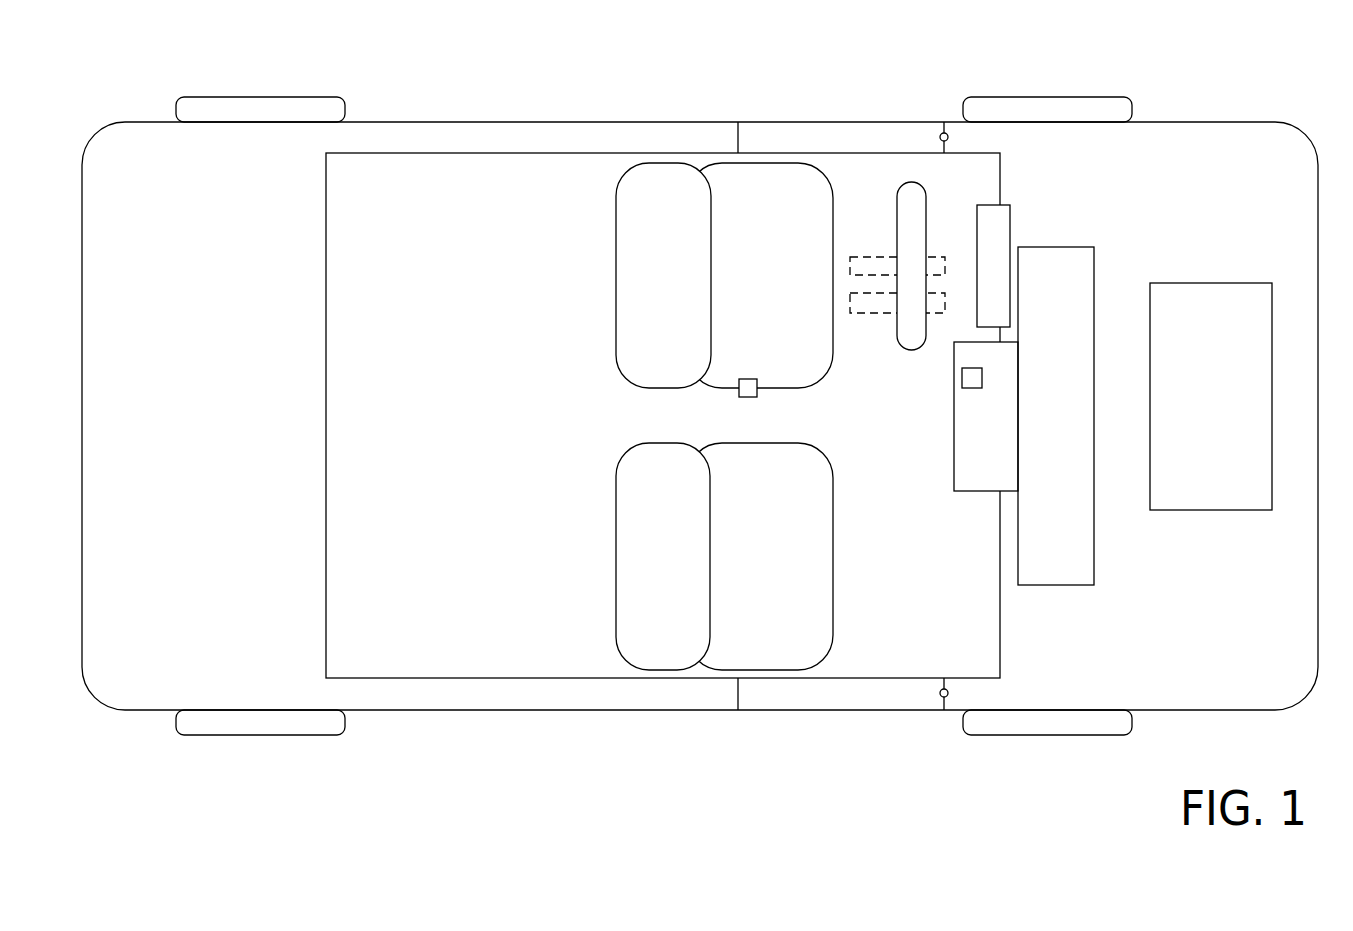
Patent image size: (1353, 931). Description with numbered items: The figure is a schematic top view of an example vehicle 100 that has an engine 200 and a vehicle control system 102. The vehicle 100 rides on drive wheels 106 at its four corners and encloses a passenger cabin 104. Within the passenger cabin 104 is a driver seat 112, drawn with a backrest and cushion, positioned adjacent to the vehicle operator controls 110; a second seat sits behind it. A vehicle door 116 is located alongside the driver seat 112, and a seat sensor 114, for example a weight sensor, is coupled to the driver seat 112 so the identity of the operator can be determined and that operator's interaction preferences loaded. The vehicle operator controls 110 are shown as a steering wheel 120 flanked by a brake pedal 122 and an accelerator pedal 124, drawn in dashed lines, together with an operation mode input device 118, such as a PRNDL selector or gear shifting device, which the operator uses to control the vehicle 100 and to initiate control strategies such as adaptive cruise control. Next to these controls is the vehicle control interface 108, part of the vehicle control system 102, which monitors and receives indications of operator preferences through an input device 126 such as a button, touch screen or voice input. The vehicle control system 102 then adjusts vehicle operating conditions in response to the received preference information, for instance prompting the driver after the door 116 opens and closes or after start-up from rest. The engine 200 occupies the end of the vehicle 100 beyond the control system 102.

The vehicle 100 is at (1188, 93).
The vehicle control system 102 is at (1056, 416).
The passenger cabin 104 is at (326, 418).
The drive wheels 106 is at (260, 96).
The vehicle control interface 108 is at (986, 416).
The vehicle operator controls 110 is at (954, 241).
The driver seat 112 is at (616, 237).
The seat sensor 114 is at (747, 398).
The vehicle door 116 is at (842, 122).
The operation mode input device 118 is at (985, 195).
The steering wheel 120 is at (927, 222).
The brake pedal 122 is at (889, 257).
The accelerator pedal 124 is at (889, 313).
The input device 126 is at (961, 378).
The engine 200 is at (1211, 396).